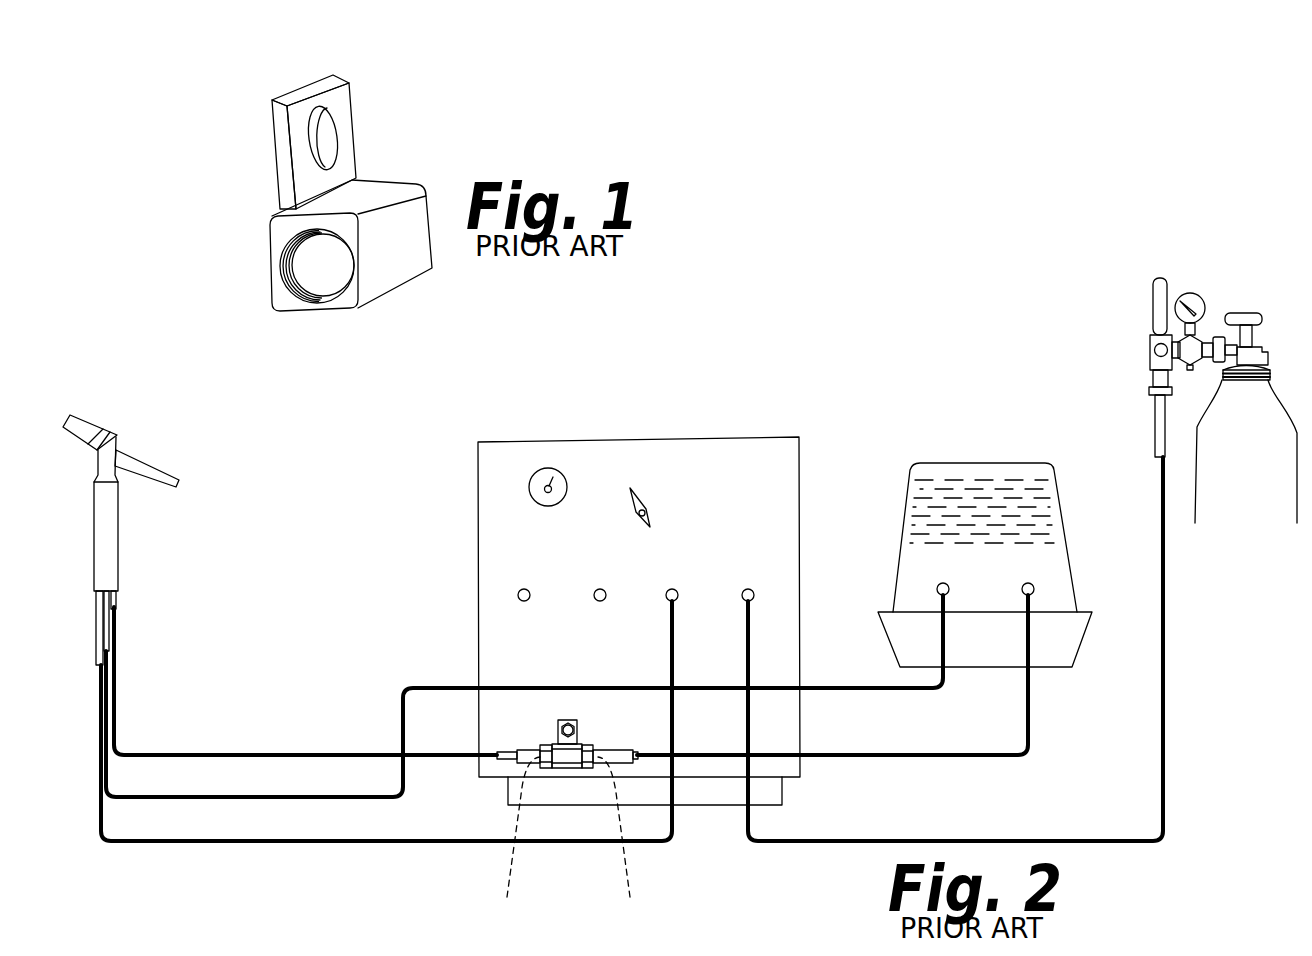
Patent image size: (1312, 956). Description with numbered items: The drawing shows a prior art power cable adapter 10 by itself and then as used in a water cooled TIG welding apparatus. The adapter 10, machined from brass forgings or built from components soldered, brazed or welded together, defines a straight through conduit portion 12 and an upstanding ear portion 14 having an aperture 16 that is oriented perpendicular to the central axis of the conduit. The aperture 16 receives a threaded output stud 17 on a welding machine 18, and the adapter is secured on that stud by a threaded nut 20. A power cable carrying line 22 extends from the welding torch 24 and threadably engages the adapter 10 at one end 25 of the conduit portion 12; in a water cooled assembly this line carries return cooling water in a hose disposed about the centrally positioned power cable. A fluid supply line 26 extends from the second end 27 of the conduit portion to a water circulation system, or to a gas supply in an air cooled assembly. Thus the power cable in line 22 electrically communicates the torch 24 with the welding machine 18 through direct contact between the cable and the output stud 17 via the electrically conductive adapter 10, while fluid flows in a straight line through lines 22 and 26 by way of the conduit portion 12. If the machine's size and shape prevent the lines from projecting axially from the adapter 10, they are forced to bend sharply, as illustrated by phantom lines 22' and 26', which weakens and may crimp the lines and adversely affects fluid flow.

In FIG. 1, the power cable adapter 10 is at (374, 205).
In FIG. 2, the power cable adapter 10 is at (572, 722).
In FIG. 1, the conduit portion 12 is at (401, 265).
In FIG. 2, the conduit portion 12 is at (562, 764).
In FIG. 1, the ear portion 14 is at (348, 140).
In FIG. 1, the aperture 16 is at (324, 132).
In FIG. 2, the threaded output stud 17 is at (572, 725).
In FIG. 2, the welding machine 18 is at (762, 438).
In FIG. 2, the threaded nut 20 is at (566, 696).
In FIG. 2, the power cable carrying line 22 is at (305, 681).
In FIG. 2, the phantom line 22' is at (476, 827).
In FIG. 2, the welding torch 24 is at (115, 468).
In FIG. 2, the one end of conduit portion 25 is at (543, 747).
In FIG. 2, the fluid supply line 26 is at (832, 675).
In FIG. 2, the phantom line 26' is at (656, 827).
In FIG. 2, the second end of conduit portion 27 is at (590, 742).